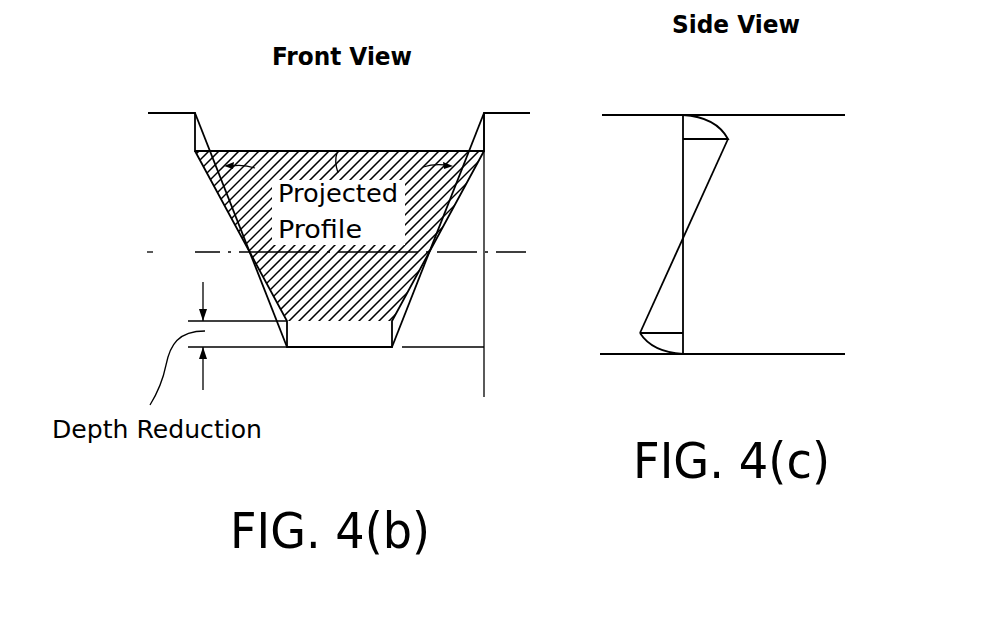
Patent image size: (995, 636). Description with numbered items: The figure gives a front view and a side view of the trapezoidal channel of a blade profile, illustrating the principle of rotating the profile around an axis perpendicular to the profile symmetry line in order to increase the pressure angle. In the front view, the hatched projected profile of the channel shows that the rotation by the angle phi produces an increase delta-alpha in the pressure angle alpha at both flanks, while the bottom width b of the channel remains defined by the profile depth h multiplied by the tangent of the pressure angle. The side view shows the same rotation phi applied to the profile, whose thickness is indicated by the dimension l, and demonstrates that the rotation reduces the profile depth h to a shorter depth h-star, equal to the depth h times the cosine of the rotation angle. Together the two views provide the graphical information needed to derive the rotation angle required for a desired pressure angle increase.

The bottom width b is at (484, 385).
The profile depth h is at (803, 115).
The offset length l is at (728, 128).